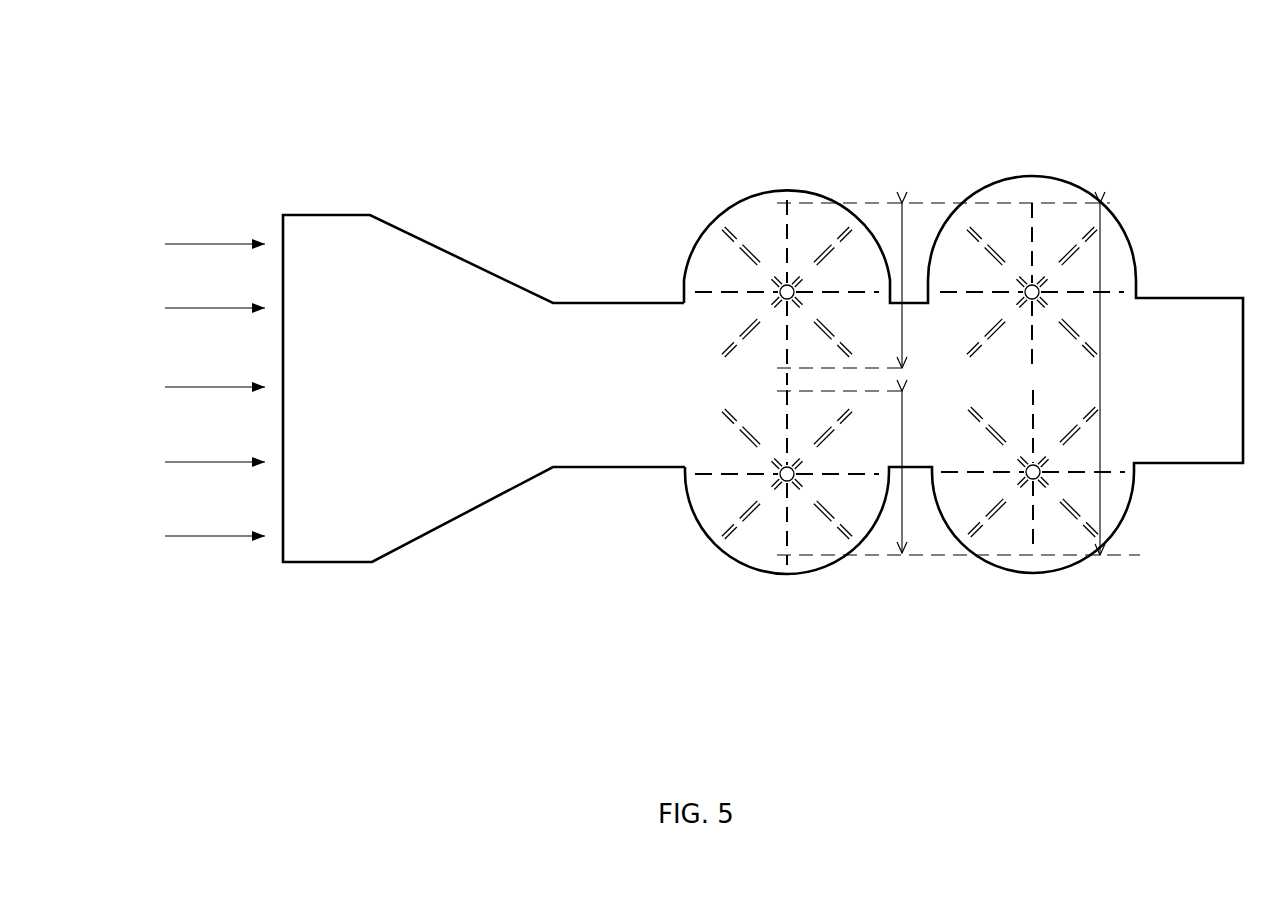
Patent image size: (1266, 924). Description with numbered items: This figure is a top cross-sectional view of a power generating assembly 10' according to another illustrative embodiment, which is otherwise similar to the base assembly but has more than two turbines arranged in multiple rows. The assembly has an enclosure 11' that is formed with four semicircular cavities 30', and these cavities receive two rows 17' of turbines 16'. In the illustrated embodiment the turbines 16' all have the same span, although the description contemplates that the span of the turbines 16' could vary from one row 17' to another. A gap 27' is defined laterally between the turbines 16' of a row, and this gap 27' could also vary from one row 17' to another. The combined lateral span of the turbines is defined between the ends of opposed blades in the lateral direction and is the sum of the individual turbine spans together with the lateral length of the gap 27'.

The power generating assembly 10' is at (704, 340).
The enclosure 11' is at (484, 410).
The turbines 16' is at (910, 393).
The rows of turbines 17' is at (976, 288).
The gap 27' is at (731, 264).
The semicircular cavities 30' is at (904, 320).